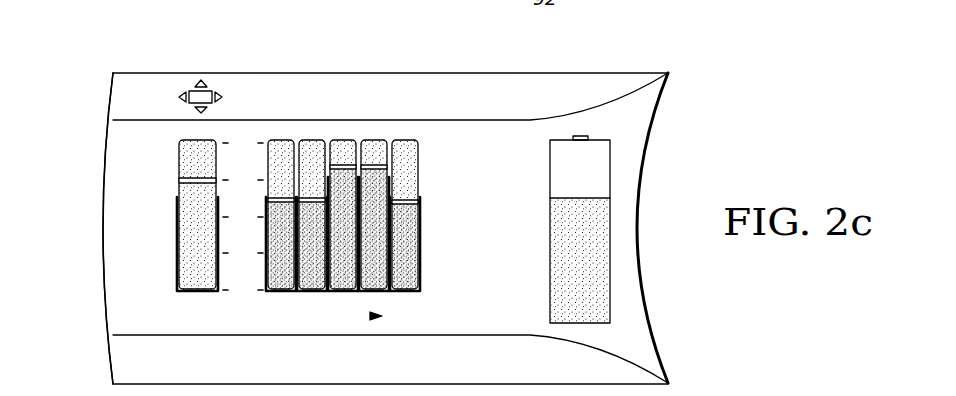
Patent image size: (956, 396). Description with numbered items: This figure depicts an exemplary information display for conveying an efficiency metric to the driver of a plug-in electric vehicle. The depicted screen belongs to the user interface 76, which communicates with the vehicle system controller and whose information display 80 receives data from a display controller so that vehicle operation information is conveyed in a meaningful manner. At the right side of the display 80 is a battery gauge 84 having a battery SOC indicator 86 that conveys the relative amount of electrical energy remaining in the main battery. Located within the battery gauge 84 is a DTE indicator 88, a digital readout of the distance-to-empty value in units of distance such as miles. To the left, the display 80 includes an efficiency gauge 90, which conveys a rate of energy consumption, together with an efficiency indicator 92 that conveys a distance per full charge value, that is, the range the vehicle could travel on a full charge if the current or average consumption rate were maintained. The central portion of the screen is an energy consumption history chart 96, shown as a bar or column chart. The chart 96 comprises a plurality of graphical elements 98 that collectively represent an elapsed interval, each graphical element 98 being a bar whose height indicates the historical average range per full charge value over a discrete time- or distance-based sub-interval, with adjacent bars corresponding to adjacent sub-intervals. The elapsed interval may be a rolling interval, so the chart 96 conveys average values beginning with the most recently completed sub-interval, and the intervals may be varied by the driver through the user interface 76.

The user interface 76 is at (134, 41).
The information display 80 is at (104, 241).
The battery gauge 84 is at (610, 286).
The battery SOC indicator 86 is at (582, 195).
The DTE indicator 88 is at (603, 238).
The efficiency gauge 90 is at (178, 269).
The efficiency indicator 92 is at (197, 176).
The energy consumption history chart 96 is at (440, 152).
The graphical elements 98 is at (313, 140).